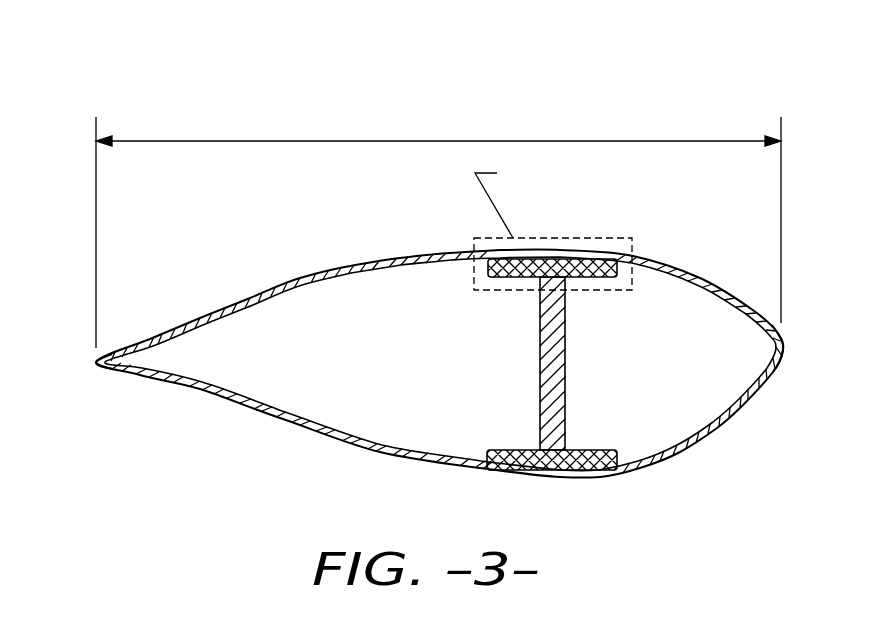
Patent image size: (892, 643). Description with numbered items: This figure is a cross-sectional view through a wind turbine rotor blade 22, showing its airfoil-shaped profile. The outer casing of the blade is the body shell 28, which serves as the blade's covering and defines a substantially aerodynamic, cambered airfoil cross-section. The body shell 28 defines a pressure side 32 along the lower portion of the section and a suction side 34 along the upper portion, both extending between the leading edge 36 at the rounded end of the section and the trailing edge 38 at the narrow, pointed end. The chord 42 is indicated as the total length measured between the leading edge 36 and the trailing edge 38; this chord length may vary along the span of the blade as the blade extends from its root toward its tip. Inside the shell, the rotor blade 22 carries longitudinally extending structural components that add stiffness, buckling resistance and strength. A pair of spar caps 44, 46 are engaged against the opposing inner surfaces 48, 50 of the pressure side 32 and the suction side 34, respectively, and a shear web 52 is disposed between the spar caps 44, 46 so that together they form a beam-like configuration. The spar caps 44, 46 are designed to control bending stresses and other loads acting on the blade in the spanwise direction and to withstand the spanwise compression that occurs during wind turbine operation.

The rotor blade 22 is at (697, 96).
The body shell 28 is at (318, 270).
The pressure side 32 is at (372, 450).
The suction side 34 is at (418, 258).
The leading edge 36 is at (783, 353).
The trailing edge 38 is at (92, 362).
The chord 42 is at (275, 138).
The spar cap 44 is at (580, 470).
The spar cap 46 is at (576, 258).
The inner surface 48 is at (272, 402).
The inner surface 50 is at (350, 282).
The shear web 52 is at (567, 398).